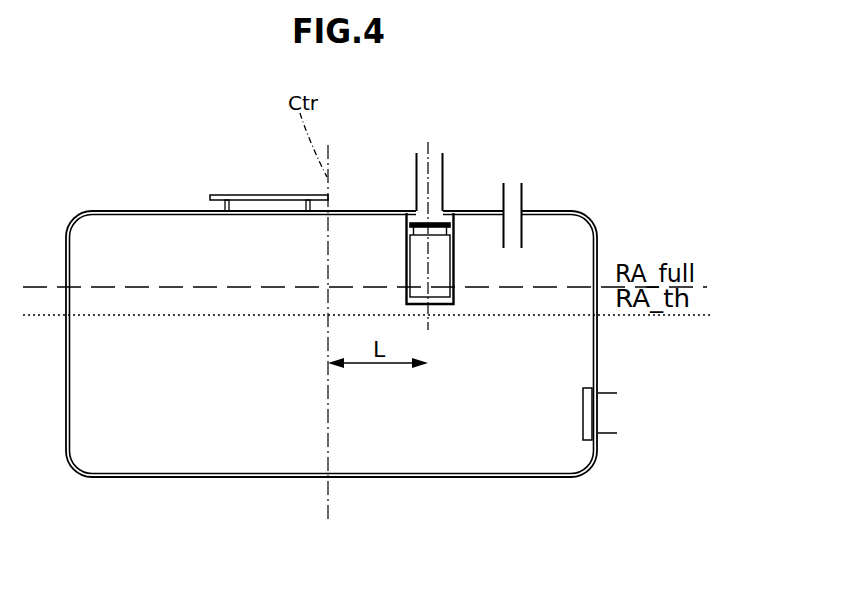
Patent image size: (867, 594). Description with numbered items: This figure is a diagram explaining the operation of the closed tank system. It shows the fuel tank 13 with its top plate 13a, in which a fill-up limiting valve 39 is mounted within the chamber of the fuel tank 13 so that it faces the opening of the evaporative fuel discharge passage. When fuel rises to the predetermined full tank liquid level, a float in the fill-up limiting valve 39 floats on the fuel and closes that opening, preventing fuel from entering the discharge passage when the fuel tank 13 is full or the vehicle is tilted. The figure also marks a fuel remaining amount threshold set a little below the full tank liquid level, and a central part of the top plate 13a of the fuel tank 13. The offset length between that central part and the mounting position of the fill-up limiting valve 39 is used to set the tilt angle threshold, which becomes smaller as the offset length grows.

The fuel tank 13 is at (137, 211).
The fill-up limiting valve 39 is at (453, 263).
The top plate 13a is at (487, 210).